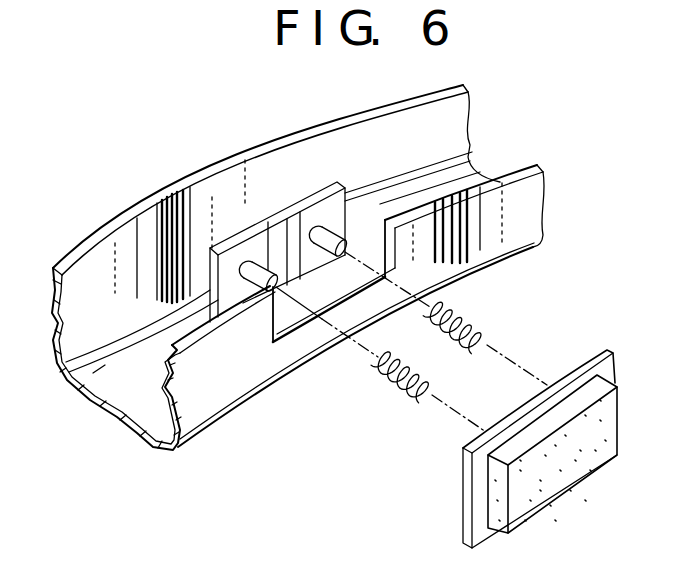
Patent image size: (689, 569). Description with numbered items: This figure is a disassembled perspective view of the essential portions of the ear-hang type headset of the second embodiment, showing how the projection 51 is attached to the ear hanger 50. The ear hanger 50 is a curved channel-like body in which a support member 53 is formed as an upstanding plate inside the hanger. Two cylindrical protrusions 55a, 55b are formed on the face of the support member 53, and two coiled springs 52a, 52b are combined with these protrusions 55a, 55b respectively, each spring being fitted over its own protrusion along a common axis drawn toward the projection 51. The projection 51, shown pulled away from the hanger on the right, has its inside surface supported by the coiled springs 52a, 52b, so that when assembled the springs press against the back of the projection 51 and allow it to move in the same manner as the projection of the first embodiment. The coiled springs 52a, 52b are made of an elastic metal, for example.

The ear hanger 50 is at (357, 118).
The projection 51 is at (572, 470).
The coiled spring 52a is at (397, 387).
The coiled spring 52b is at (476, 325).
The support member 53 is at (263, 213).
The cylindrical protrusion 55a is at (244, 287).
The cylindrical protrusion 55b is at (340, 238).